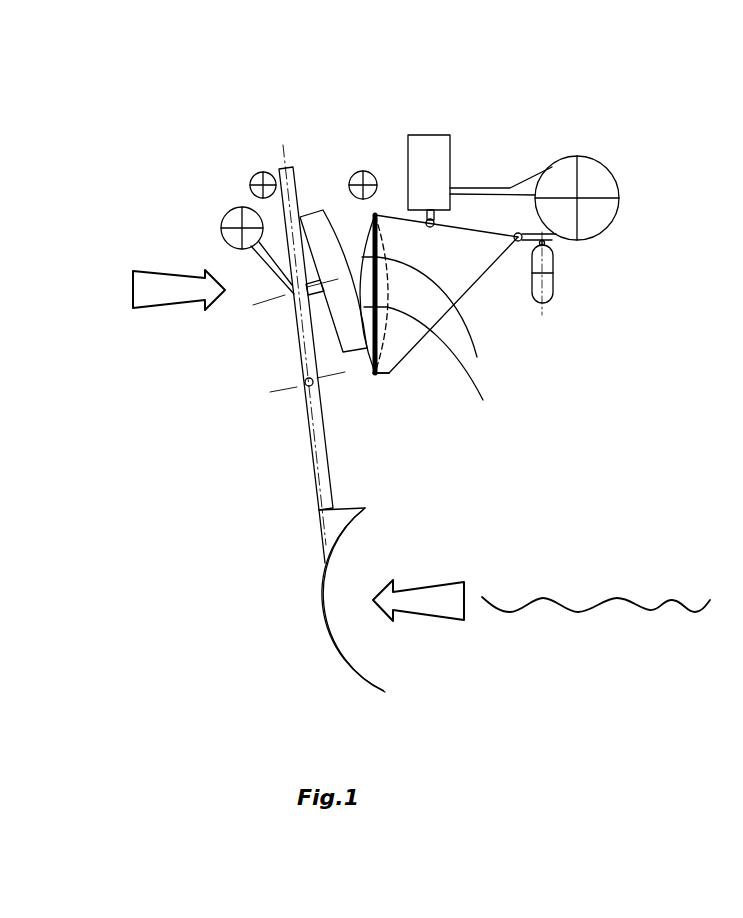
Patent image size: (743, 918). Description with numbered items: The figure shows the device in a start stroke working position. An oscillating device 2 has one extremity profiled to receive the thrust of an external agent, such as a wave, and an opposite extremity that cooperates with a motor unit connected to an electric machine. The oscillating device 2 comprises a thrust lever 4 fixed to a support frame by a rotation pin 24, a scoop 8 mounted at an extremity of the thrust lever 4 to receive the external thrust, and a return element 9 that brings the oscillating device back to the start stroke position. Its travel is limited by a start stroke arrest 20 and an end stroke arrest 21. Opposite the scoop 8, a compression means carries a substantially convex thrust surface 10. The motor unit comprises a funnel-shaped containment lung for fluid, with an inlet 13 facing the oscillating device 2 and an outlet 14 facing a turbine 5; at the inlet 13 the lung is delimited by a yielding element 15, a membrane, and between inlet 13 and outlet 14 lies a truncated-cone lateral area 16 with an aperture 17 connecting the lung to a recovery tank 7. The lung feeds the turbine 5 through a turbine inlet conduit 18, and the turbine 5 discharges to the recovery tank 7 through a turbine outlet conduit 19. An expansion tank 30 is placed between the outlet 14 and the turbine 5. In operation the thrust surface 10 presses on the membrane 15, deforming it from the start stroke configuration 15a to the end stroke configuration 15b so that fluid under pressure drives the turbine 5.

The oscillating device 2 is at (268, 133).
The thrust lever 4 is at (311, 462).
The turbine 5 is at (616, 173).
The recovery tank 7 is at (447, 136).
The scoop 8 is at (333, 640).
The return element 9 is at (220, 222).
The thrust surface 10 is at (327, 212).
The inlet 13 is at (367, 312).
The outlet 14 is at (509, 238).
The yielding element 15 is at (367, 353).
The start stroke configuration 15a is at (442, 316).
The end stroke configuration 15b is at (446, 361).
The lateral area 16 is at (395, 370).
The aperture 17 is at (436, 222).
The turbine inlet conduit 18 is at (559, 246).
The turbine outlet conduit 19 is at (511, 179).
The start stroke arrest 20 is at (250, 184).
The end stroke arrest 21 is at (363, 171).
The rotation pin 24 is at (304, 389).
The expansion tank 30 is at (552, 290).